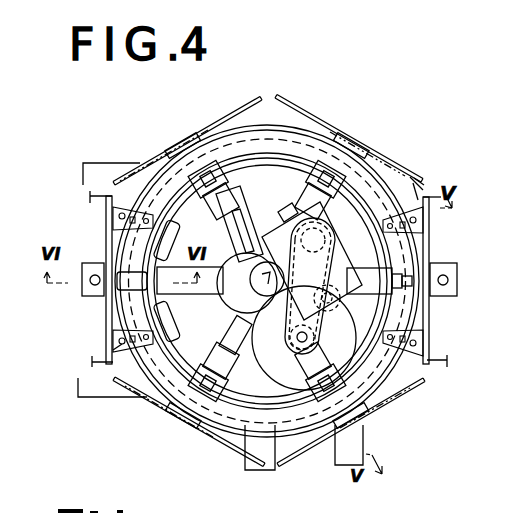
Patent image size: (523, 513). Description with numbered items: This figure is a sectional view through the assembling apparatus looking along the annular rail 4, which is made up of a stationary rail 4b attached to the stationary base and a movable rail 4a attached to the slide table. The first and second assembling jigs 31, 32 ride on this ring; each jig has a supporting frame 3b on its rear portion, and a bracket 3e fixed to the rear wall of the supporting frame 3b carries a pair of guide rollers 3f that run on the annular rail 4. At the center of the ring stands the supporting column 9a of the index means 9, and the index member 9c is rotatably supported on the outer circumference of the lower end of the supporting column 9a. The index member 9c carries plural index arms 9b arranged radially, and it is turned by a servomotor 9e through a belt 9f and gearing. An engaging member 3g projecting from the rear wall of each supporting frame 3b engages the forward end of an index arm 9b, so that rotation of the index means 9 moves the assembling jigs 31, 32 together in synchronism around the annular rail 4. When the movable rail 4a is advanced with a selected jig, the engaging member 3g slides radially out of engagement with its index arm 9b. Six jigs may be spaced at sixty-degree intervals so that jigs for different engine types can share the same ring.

The first assembling jig 31 is at (112, 238).
The second assembling jig 32 is at (430, 312).
The supporting frame 3b is at (107, 207).
The bracket 3e is at (420, 184).
The guide rollers 3f is at (405, 228).
The engaging member 3g is at (163, 301).
The annular rail 4 is at (283, 111).
The movable rail 4a is at (125, 310).
The stationary rail 4b is at (314, 140).
The index means 9 is at (300, 398).
The supporting column 9a is at (266, 472).
The index arms 9b is at (212, 345).
The index member 9c is at (260, 200).
The servomotor 9e is at (333, 213).
The belt 9f is at (370, 402).